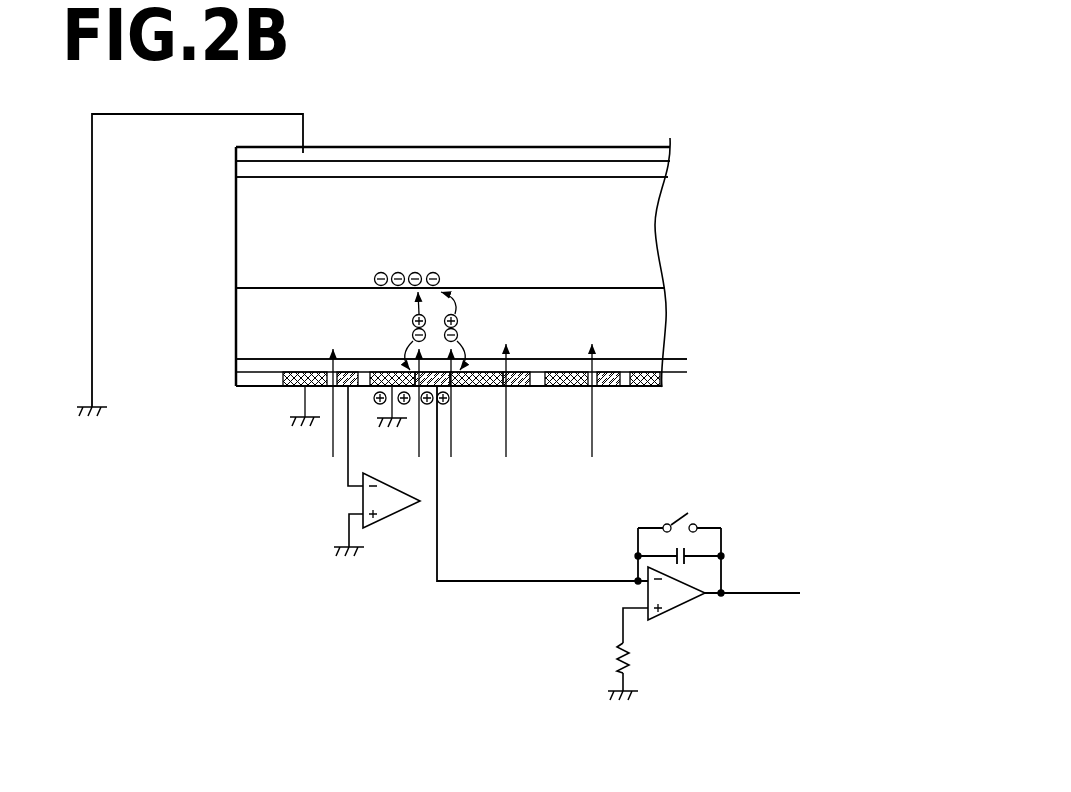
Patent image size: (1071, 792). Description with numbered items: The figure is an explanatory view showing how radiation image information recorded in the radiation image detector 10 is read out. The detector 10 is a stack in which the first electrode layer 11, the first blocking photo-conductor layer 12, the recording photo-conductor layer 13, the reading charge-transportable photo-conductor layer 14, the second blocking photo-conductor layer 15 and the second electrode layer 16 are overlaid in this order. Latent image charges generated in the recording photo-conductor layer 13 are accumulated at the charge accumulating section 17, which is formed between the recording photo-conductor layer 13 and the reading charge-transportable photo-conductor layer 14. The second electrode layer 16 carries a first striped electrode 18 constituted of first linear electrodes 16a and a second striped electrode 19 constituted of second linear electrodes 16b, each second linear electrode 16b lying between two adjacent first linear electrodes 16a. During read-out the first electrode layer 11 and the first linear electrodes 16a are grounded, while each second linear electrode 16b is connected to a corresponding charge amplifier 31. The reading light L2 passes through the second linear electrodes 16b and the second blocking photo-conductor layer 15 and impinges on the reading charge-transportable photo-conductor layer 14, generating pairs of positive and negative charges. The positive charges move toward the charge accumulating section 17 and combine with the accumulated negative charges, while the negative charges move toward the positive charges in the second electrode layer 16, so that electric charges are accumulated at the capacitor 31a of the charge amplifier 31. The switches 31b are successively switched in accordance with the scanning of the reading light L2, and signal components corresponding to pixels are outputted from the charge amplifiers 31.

The radiation image detector 10 is at (205, 192).
The first electrode layer 11 is at (240, 154).
The first blocking photo-conductor layer 12 is at (240, 172).
The recording photo-conductor layer 13 is at (240, 232).
The reading charge-transportable photo-conductor layer 14 is at (240, 313).
The second blocking photo-conductor layer 15 is at (245, 368).
The second electrode layer 16 is at (462, 354).
The first linear electrode 16a is at (552, 372).
The second linear electrode 16b is at (607, 372).
The charge accumulating section 17 is at (260, 285).
The first striped electrode 18 is at (471, 341).
The second striped electrode 19 is at (554, 341).
The charge amplifier 31 is at (330, 517).
The capacitor 31a is at (716, 542).
The switch 31b is at (680, 516).
The reading light L2 is at (595, 435).